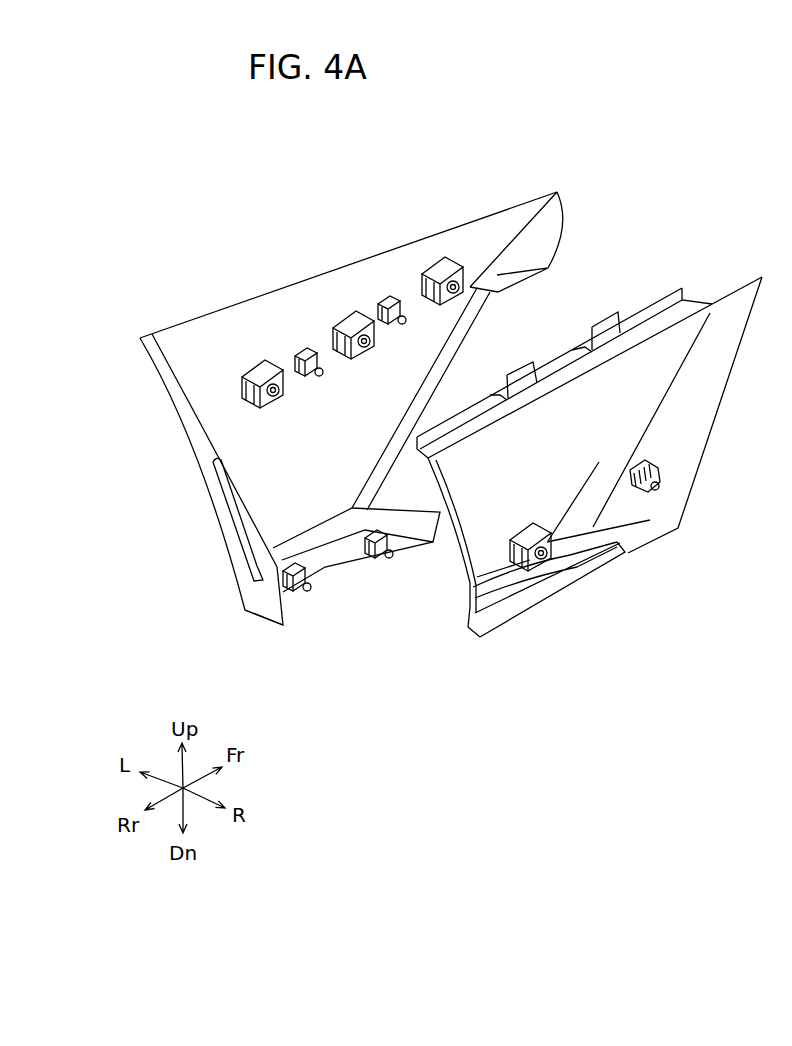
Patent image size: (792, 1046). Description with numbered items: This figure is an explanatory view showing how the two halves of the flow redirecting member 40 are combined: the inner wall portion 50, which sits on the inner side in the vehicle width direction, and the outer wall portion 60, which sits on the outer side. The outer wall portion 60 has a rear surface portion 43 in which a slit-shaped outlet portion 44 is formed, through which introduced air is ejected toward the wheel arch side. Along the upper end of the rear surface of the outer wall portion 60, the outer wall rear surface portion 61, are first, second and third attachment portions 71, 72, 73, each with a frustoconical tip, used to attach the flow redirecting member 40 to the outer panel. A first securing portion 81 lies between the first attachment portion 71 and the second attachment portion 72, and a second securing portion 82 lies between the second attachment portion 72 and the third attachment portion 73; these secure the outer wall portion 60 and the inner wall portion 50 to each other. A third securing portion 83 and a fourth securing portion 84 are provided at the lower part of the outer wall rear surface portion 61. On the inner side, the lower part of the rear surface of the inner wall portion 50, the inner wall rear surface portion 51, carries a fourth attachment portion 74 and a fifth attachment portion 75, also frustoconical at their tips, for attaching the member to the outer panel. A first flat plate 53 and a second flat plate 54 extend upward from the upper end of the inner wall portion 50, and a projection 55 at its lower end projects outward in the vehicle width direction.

The flow redirecting member 40 is at (488, 126).
The inner wall portion 50 is at (701, 253).
The inner wall rear surface portion 51 is at (682, 438).
The first flat plate 53 is at (528, 362).
The second flat plate 54 is at (605, 327).
The projection 55 is at (598, 552).
The outer wall portion 60 is at (143, 311).
The outer wall rear surface portion 61 is at (212, 353).
The rear surface portion 43 is at (258, 607).
The outlet portion 44 is at (237, 523).
The first attachment portion 71 is at (273, 360).
The second attachment portion 72 is at (367, 317).
The third attachment portion 73 is at (452, 257).
The fourth attachment portion 74 is at (540, 552).
The fifth attachment portion 75 is at (658, 493).
The first securing portion 81 is at (317, 347).
The second securing portion 82 is at (393, 300).
The third securing portion 83 is at (303, 583).
The fourth securing portion 84 is at (387, 547).